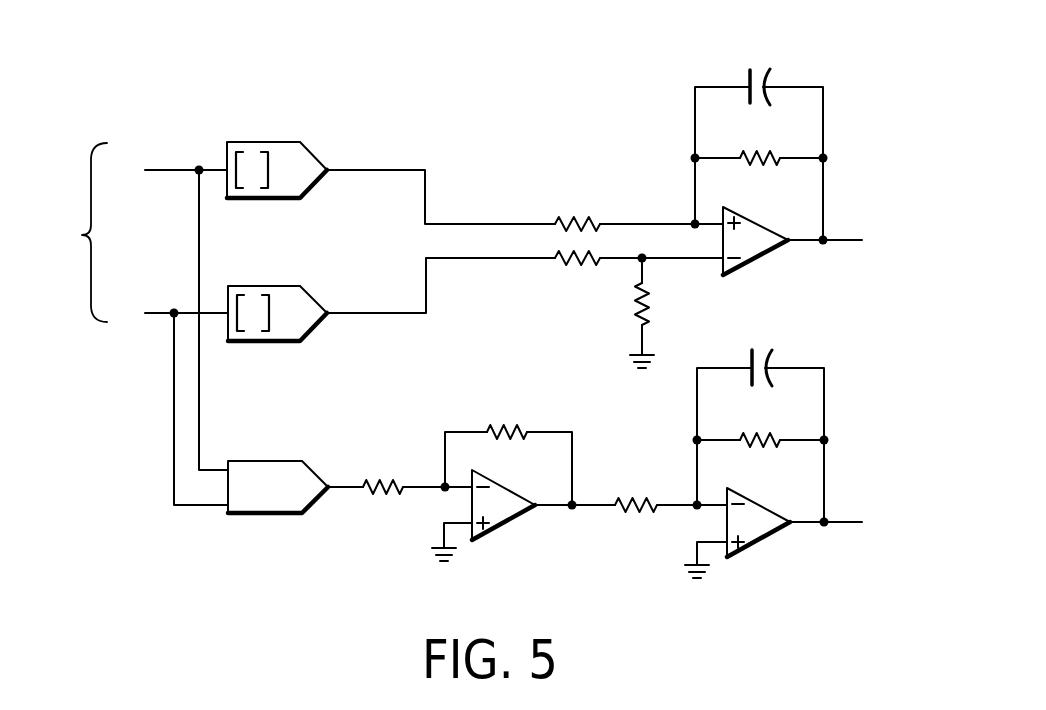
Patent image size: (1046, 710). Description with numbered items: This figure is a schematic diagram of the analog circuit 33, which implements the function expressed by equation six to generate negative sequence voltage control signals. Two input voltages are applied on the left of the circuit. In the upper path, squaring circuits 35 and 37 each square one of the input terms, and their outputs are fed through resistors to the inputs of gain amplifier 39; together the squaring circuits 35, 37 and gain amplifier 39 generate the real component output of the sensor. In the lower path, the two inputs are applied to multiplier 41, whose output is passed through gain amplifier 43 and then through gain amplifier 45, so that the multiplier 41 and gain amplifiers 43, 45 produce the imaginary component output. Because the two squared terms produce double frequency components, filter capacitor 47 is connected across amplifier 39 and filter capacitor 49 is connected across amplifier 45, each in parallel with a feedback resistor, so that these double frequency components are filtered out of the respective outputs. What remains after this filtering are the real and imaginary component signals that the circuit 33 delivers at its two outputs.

The analog circuit 33 is at (487, 311).
The squaring circuit 35 is at (313, 152).
The squaring circuit 37 is at (313, 296).
The gain amplifier 39 is at (765, 222).
The multiplier 41 is at (315, 500).
The gain amplifier 43 is at (510, 522).
The gain amplifier 45 is at (768, 538).
The filter capacitor 47 is at (765, 75).
The filter capacitor 49 is at (767, 357).